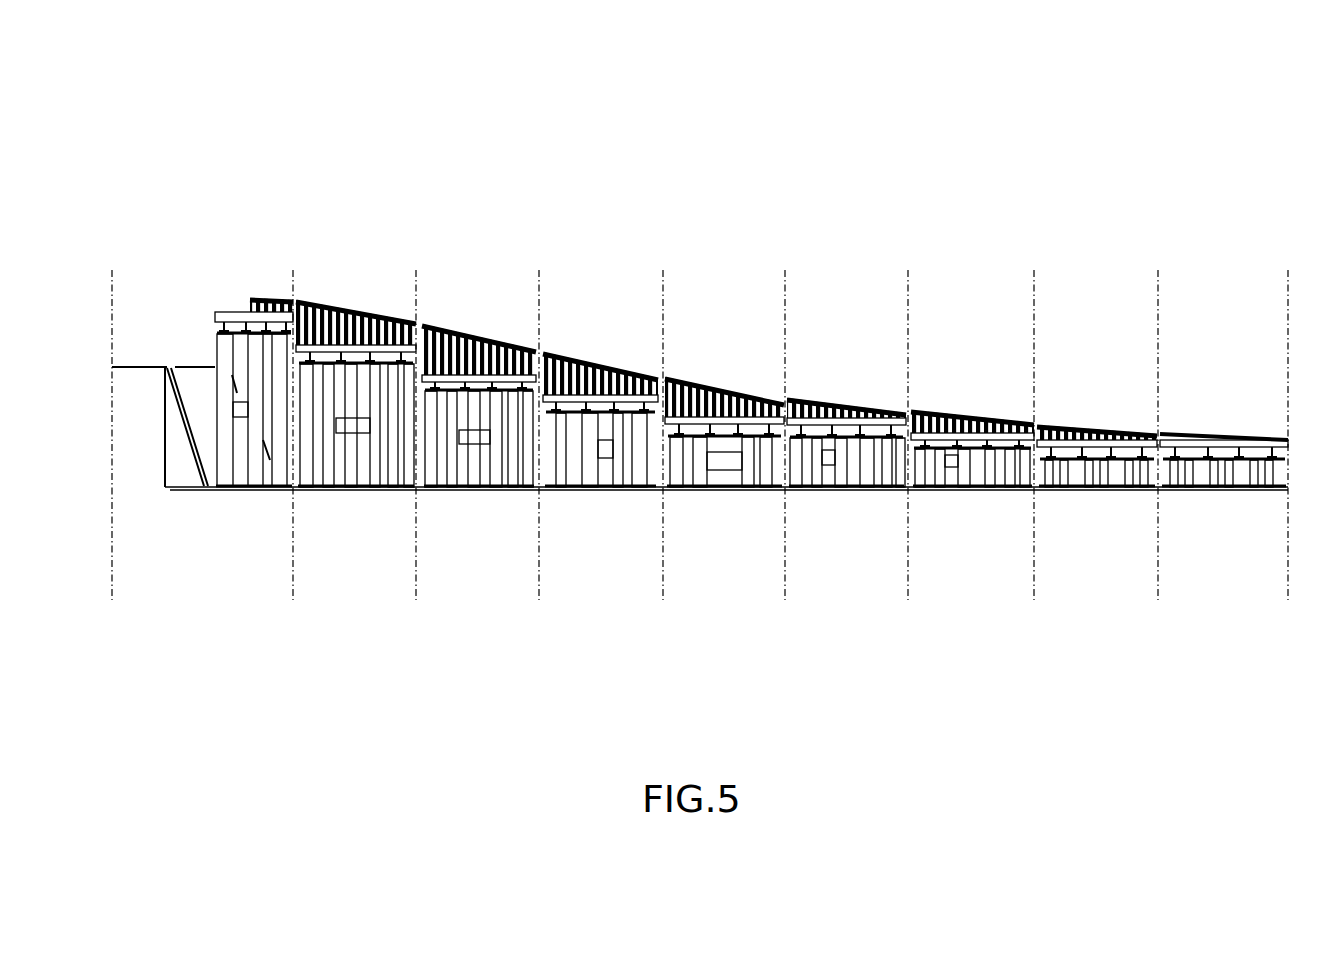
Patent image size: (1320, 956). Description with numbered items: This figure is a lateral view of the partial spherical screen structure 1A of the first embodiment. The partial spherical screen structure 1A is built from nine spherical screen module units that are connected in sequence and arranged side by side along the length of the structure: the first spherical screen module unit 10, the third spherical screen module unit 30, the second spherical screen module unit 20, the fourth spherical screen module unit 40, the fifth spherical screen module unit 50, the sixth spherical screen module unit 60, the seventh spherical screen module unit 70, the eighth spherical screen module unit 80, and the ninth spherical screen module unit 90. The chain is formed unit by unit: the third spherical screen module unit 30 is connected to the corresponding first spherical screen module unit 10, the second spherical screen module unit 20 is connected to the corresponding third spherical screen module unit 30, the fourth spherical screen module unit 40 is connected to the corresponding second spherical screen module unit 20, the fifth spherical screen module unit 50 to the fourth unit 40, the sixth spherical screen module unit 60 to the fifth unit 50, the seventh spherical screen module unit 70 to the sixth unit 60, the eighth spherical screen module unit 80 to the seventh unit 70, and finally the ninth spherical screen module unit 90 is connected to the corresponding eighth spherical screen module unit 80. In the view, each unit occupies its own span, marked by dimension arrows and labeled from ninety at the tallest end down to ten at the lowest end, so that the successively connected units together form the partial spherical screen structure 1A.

The partial spherical screen structure 1A is at (227, 170).
The first spherical screen module unit 10 is at (1288, 556).
The second spherical screen module unit 20 is at (1034, 556).
The third spherical screen module unit 30 is at (1034, 556).
The fourth spherical screen module unit 40 is at (908, 556).
The fifth spherical screen module unit 50 is at (663, 556).
The sixth spherical screen module unit 60 is at (539, 556).
The seventh spherical screen module unit 70 is at (539, 556).
The eighth spherical screen module unit 80 is at (416, 556).
The ninth spherical screen module unit 90 is at (112, 556).